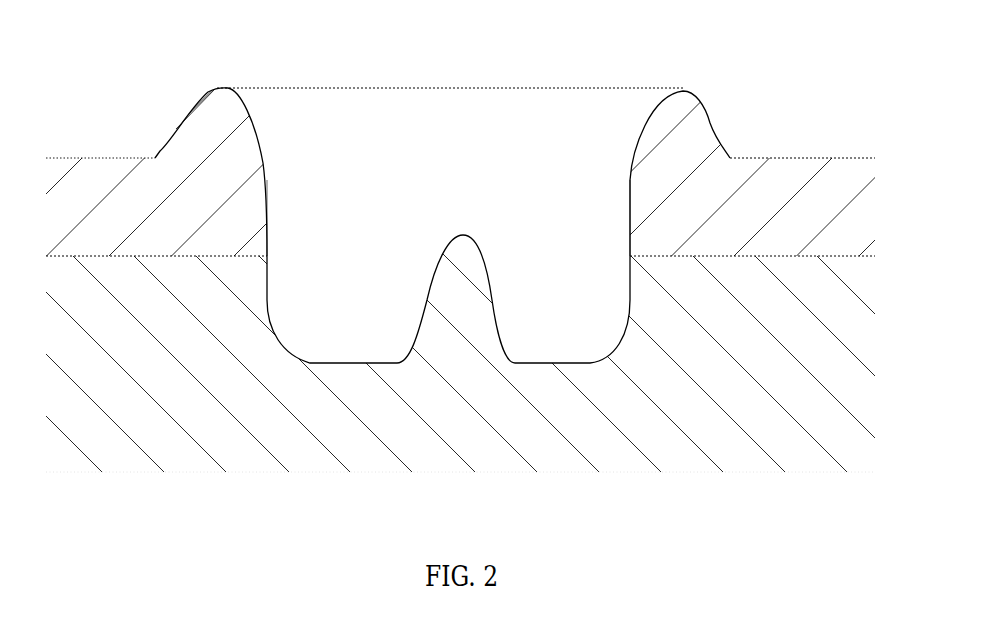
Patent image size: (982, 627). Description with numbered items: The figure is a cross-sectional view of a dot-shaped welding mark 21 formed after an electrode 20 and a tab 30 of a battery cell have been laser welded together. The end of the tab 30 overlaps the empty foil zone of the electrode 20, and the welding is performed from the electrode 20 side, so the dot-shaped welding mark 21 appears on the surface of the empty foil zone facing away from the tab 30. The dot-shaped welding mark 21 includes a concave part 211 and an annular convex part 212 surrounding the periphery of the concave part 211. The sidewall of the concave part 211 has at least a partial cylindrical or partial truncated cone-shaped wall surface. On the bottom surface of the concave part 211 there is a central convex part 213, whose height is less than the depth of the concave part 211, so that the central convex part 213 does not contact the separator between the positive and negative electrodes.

The electrode 20 is at (803, 182).
The dot-shaped welding mark 21 is at (171, 55).
The concave part 211 is at (368, 188).
The annular convex part 212 is at (680, 113).
The central convex part 213 is at (460, 272).
The tab 30 is at (577, 440).